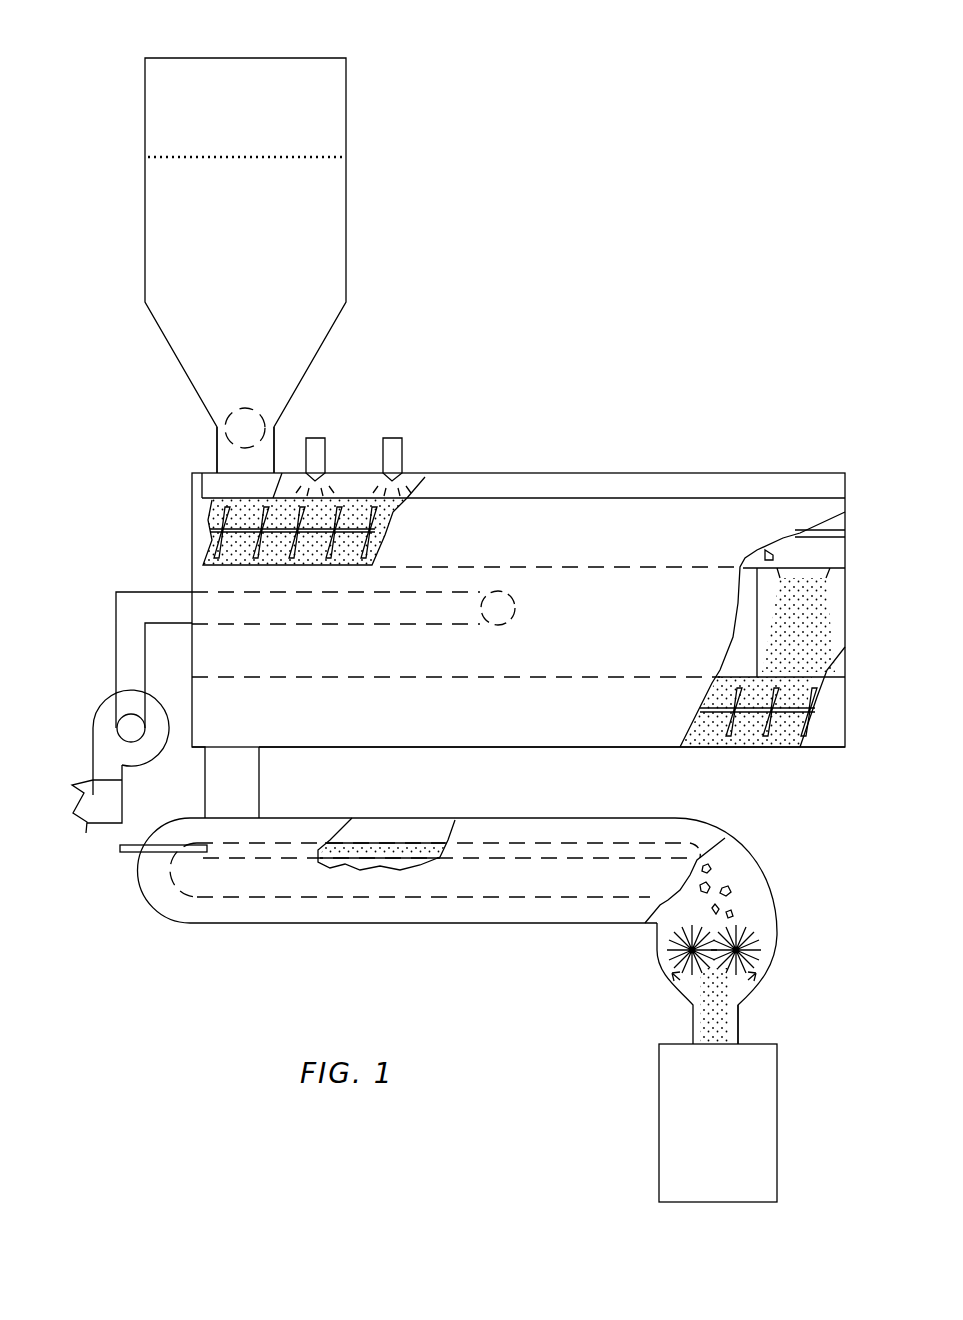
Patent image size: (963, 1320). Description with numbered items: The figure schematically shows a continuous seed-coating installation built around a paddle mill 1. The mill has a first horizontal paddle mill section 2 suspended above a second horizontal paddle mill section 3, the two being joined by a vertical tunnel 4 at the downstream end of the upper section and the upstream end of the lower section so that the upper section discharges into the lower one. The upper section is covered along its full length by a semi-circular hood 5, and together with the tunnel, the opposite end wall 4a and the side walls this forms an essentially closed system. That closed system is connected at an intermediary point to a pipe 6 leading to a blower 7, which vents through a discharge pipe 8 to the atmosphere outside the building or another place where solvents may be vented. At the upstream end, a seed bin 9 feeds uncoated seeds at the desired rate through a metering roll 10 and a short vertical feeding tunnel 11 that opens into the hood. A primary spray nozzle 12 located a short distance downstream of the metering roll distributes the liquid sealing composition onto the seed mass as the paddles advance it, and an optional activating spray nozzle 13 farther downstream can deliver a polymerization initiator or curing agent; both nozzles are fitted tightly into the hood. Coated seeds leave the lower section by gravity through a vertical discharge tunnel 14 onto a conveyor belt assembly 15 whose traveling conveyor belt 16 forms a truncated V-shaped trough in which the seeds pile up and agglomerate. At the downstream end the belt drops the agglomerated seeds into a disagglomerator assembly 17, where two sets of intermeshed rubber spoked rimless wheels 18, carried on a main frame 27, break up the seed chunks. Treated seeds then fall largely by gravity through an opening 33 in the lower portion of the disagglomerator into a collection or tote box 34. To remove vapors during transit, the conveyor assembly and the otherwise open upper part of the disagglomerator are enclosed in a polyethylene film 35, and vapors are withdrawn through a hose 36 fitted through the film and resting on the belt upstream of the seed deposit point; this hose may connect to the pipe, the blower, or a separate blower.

The paddle mill 1 is at (677, 707).
The first horizontal paddle mill section 2 is at (565, 567).
The second horizontal paddle mill section 3 is at (553, 748).
The vertical tunnel 4 is at (757, 618).
The opposite end wall 4a is at (192, 514).
The semi-circular hood 5 is at (657, 473).
The pipe 6 is at (140, 592).
The blower 7 is at (95, 712).
The discharge pipe 8 is at (105, 825).
The seed bin 9 is at (346, 118).
The metering roll 10 is at (247, 408).
The vertical feeding tunnel 11 is at (216, 453).
The primary spray nozzle 12 is at (314, 437).
The activating spray nozzle 13 is at (391, 437).
The vertical discharge tunnel 14 is at (262, 782).
The conveyor belt assembly 15 is at (435, 870).
The conveyor belt 16 is at (578, 843).
The disagglomerator assembly 17 is at (683, 1002).
The rubber spoked rimless wheels 18 is at (670, 947).
The main frame 27 is at (472, 922).
The opening 33 is at (740, 1020).
The collection or tote box 34 is at (720, 1127).
The polyethylene film 35 is at (673, 818).
The hose 36 is at (125, 852).